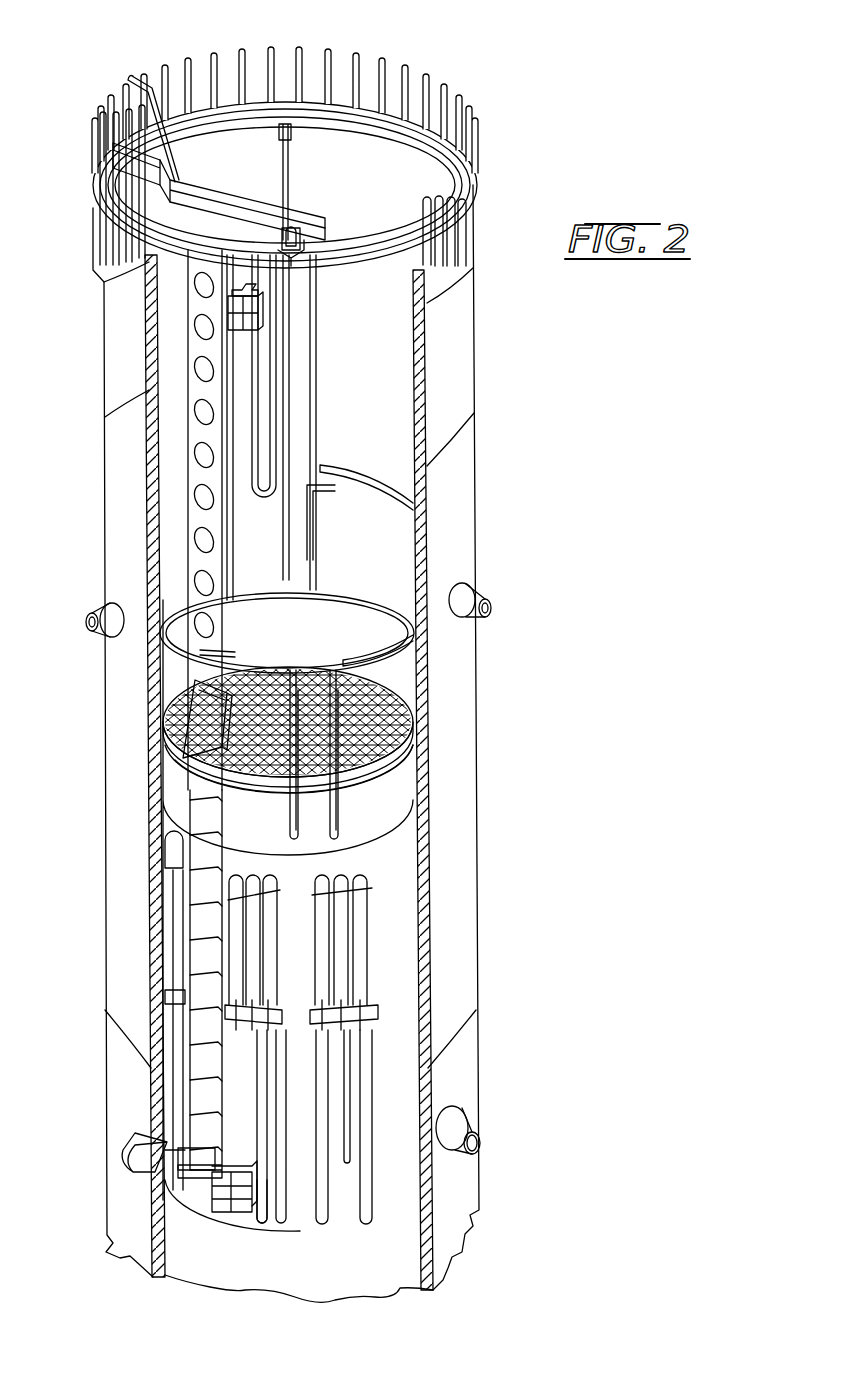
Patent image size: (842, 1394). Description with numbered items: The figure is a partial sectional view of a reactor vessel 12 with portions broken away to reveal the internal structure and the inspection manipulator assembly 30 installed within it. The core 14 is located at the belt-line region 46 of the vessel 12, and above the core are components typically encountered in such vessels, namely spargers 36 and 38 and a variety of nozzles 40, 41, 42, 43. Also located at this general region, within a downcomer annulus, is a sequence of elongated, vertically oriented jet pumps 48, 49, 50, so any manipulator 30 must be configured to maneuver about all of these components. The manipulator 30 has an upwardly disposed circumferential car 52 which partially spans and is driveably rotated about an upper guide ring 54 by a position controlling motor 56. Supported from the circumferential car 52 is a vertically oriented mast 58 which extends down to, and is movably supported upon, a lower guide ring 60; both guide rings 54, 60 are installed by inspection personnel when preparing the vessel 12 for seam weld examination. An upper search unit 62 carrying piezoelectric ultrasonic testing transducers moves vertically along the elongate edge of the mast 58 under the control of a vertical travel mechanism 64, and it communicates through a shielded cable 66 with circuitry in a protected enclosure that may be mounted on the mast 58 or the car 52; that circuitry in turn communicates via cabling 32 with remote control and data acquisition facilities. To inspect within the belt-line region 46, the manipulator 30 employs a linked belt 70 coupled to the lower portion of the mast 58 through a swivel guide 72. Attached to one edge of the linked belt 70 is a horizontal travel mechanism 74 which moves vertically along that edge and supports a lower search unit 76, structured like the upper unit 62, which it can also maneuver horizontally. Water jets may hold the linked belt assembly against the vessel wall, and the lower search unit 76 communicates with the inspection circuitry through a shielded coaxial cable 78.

The reactor vessel 12 is at (455, 748).
The core 14 is at (400, 845).
The manipulator assembly 30 is at (178, 562).
The cabling 32 is at (148, 80).
The sparger 36 is at (388, 636).
The sparger 38 is at (400, 668).
The nozzle 40 is at (100, 636).
The nozzle 41 is at (478, 600).
The nozzle 42 is at (145, 1180).
The nozzle 43 is at (478, 1133).
The belt-line region 46 is at (98, 918).
The jet pump 48 is at (180, 852).
The jet pump 49 is at (272, 1213).
The jet pump 50 is at (370, 965).
The circumferential car 52 is at (213, 182).
The upper guide ring 54 is at (365, 248).
The position controlling motor 56 is at (288, 230).
The mast 58 is at (195, 468).
The lower guide ring 60 is at (360, 775).
The upper search unit 62 is at (262, 322).
The vertical travel mechanism 64 is at (260, 292).
The shielded cable 66 is at (272, 393).
The linked belt 70 is at (200, 958).
The swivel guide 72 is at (205, 727).
The horizontal travel mechanism 74 is at (235, 1175).
The lower search unit 76 is at (262, 1215).
The coaxial cable 78 is at (232, 1100).